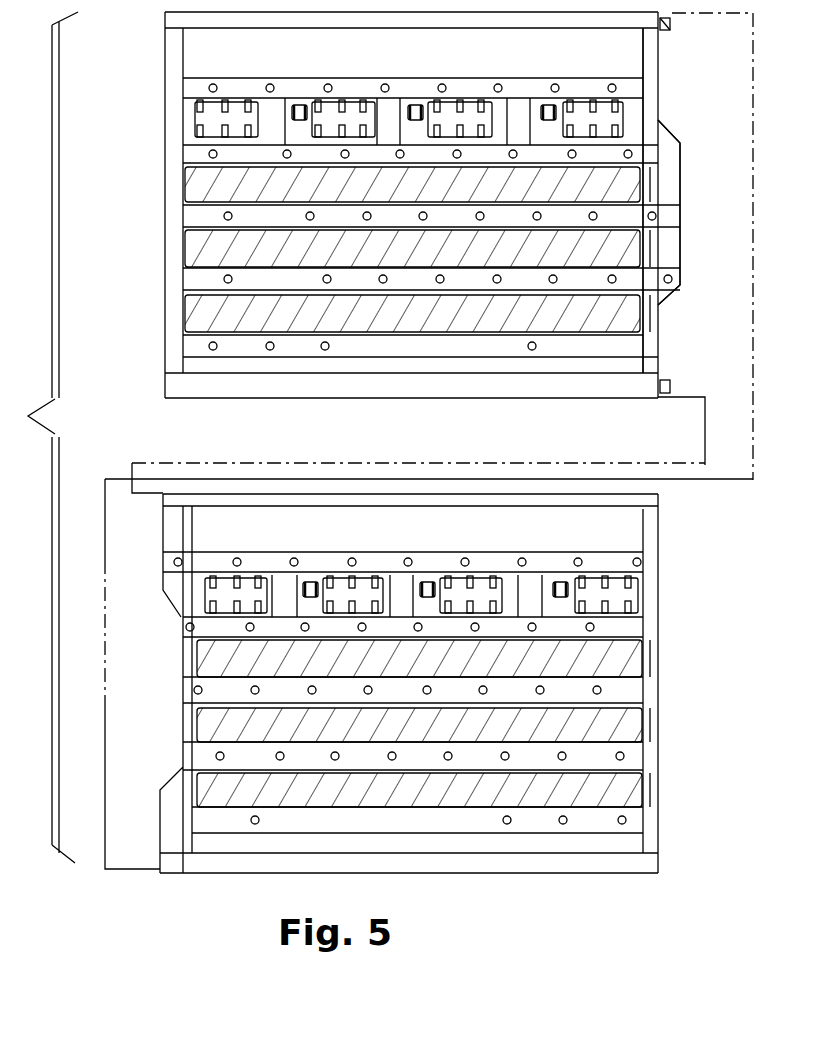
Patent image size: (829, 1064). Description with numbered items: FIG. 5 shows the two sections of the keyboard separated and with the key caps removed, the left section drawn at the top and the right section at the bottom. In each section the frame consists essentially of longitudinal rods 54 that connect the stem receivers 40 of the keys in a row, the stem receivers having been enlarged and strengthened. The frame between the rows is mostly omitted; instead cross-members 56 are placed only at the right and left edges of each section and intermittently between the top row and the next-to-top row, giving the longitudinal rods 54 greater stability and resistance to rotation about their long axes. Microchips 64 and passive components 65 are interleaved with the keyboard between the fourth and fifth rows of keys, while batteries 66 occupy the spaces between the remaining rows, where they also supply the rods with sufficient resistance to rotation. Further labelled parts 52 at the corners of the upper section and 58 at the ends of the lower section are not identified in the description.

The stem receiver 40 is at (553, 284).
The alignment blocks 52 is at (672, 30).
The longitudinal rods 54 is at (683, 155).
The cross-members 56 is at (643, 55).
The end plates 58 is at (658, 507).
The microchips 64 is at (222, 100).
The passive components 65 is at (542, 110).
The batteries 66 is at (182, 320).